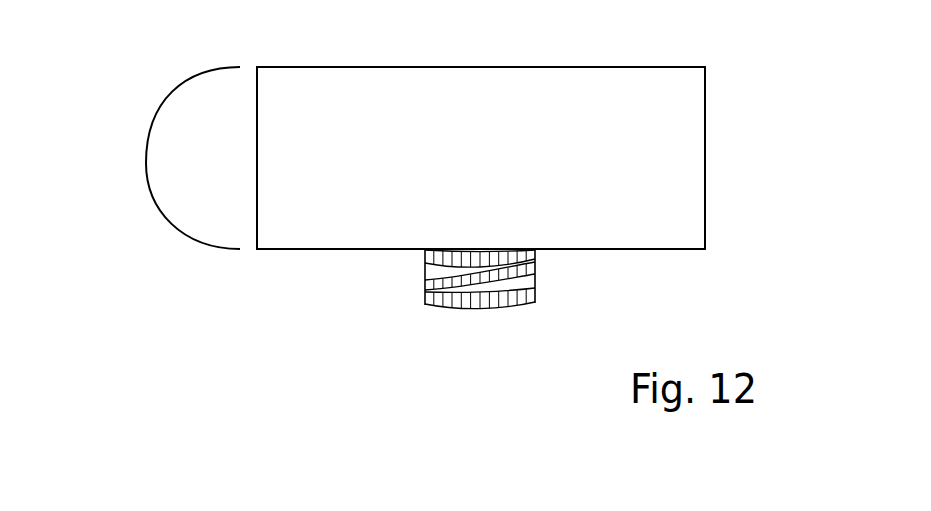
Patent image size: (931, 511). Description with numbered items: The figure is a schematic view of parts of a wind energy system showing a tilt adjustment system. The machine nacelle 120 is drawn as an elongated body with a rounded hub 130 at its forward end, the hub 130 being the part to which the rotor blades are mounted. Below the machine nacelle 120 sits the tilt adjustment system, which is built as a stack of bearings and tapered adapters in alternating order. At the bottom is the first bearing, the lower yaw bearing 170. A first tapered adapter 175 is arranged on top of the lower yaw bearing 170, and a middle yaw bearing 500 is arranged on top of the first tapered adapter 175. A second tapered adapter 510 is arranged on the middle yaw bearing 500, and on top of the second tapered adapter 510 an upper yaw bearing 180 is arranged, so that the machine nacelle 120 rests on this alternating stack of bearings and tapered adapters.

The machine nacelle 120 is at (706, 138).
The hub 130 is at (183, 227).
The lower yaw bearing 170 is at (465, 312).
The first tapered adapter 175 is at (536, 285).
The upper yaw bearing 180 is at (426, 253).
The middle yaw bearing 500 is at (536, 271).
The second tapered adapter 510 is at (426, 271).